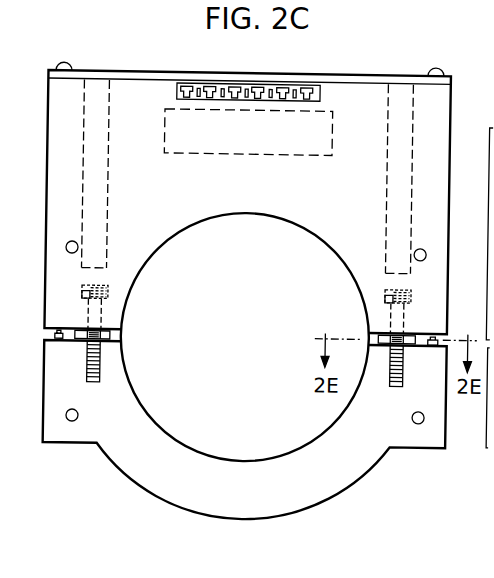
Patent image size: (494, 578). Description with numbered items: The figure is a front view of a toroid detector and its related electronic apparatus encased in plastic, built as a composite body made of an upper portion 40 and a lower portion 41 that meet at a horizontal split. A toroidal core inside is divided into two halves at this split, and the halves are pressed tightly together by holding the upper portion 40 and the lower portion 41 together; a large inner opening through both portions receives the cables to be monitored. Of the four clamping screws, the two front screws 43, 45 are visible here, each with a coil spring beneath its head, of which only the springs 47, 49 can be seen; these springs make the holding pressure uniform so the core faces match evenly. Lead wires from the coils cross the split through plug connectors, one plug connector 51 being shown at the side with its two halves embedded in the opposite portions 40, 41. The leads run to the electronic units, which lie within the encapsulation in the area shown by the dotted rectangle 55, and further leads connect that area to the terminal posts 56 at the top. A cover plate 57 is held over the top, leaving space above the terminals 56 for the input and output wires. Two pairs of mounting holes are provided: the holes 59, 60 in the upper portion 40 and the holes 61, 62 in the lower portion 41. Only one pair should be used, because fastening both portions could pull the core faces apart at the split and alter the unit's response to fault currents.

The upper portion 40 is at (452, 102).
The lower portion 41 is at (452, 425).
The front screw 43 is at (93, 365).
The front screw 45 is at (408, 367).
The coil spring 47 is at (94, 291).
The coil spring 49 is at (413, 294).
The plug connector 51 is at (493, 338).
The dotted rectangle 55 is at (333, 134).
The terminal posts 56 is at (307, 83).
The cover plate 57 is at (382, 68).
The mounting hole 59 is at (75, 241).
The mounting hole 60 is at (425, 244).
The mounting hole 61 is at (83, 414).
The mounting hole 62 is at (418, 412).